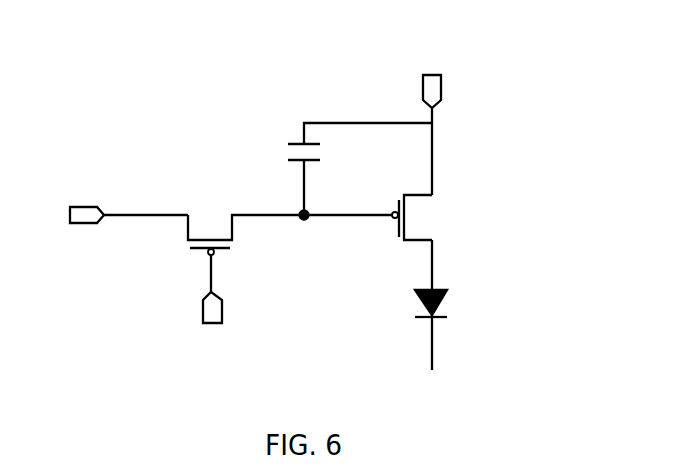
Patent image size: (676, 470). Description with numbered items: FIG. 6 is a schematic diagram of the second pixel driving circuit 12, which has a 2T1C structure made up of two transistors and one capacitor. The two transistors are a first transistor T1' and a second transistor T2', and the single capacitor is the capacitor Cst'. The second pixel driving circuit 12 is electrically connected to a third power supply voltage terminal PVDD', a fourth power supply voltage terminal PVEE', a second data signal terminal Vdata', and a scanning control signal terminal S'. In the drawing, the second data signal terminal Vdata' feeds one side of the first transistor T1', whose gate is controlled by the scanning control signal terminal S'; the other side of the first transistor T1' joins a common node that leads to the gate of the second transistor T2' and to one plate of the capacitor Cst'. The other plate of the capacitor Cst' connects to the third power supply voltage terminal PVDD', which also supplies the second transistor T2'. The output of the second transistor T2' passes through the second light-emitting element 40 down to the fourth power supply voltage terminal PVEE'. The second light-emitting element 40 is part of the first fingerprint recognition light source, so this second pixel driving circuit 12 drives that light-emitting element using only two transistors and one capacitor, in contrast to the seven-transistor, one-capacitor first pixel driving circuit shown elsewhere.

The second pixel driving circuit 12 is at (538, 18).
The second light-emitting element 40 is at (445, 291).
The first transistor of the second pixel driving circuit T1' is at (246, 237).
The second transistor of the second pixel driving circuit T2' is at (423, 217).
The capacitor Cst' is at (331, 169).
The scanning control signal terminal S' is at (209, 325).
The second data signal terminal Vdata' is at (120, 235).
The third power supply voltage terminal PVDD' is at (478, 123).
The fourth power supply voltage terminal PVEE' is at (471, 342).